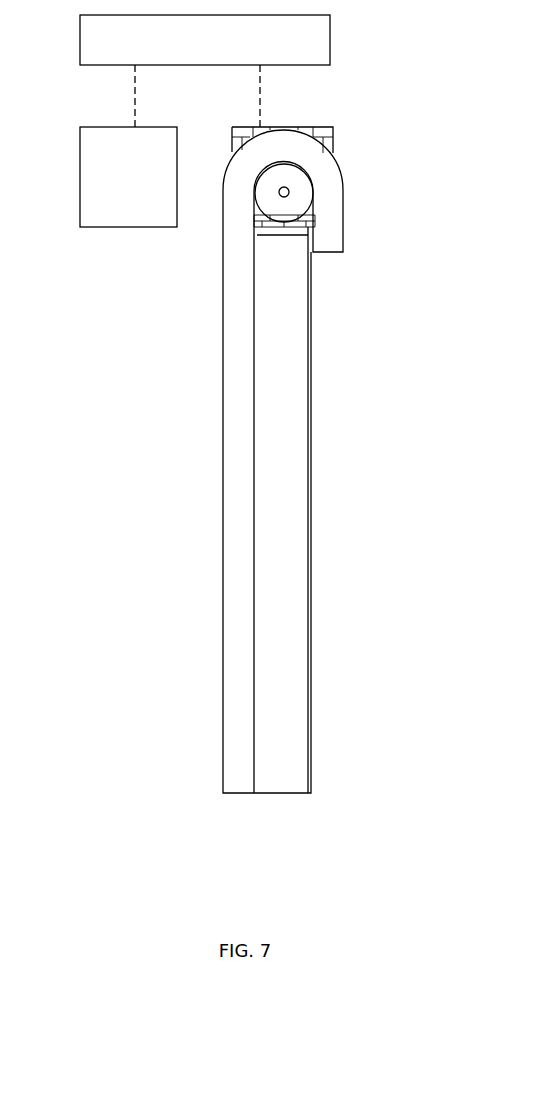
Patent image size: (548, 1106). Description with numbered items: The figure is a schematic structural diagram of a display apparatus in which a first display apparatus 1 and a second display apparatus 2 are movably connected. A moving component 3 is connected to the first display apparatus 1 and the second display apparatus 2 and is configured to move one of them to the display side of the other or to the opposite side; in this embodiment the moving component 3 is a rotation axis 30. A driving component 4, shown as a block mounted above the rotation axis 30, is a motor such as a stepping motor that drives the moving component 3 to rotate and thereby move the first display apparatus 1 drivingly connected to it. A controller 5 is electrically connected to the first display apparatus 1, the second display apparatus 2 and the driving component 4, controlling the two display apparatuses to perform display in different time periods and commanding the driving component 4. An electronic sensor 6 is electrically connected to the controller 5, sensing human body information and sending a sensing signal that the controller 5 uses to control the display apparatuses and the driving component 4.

The first display apparatus 1 is at (240, 797).
The second display apparatus 2 is at (287, 797).
The moving component 3 is at (400, 238).
The rotation axis 30 is at (303, 195).
The driving component 4 is at (322, 133).
The controller 5 is at (103, 53).
The electronic sensor 6 is at (138, 215).